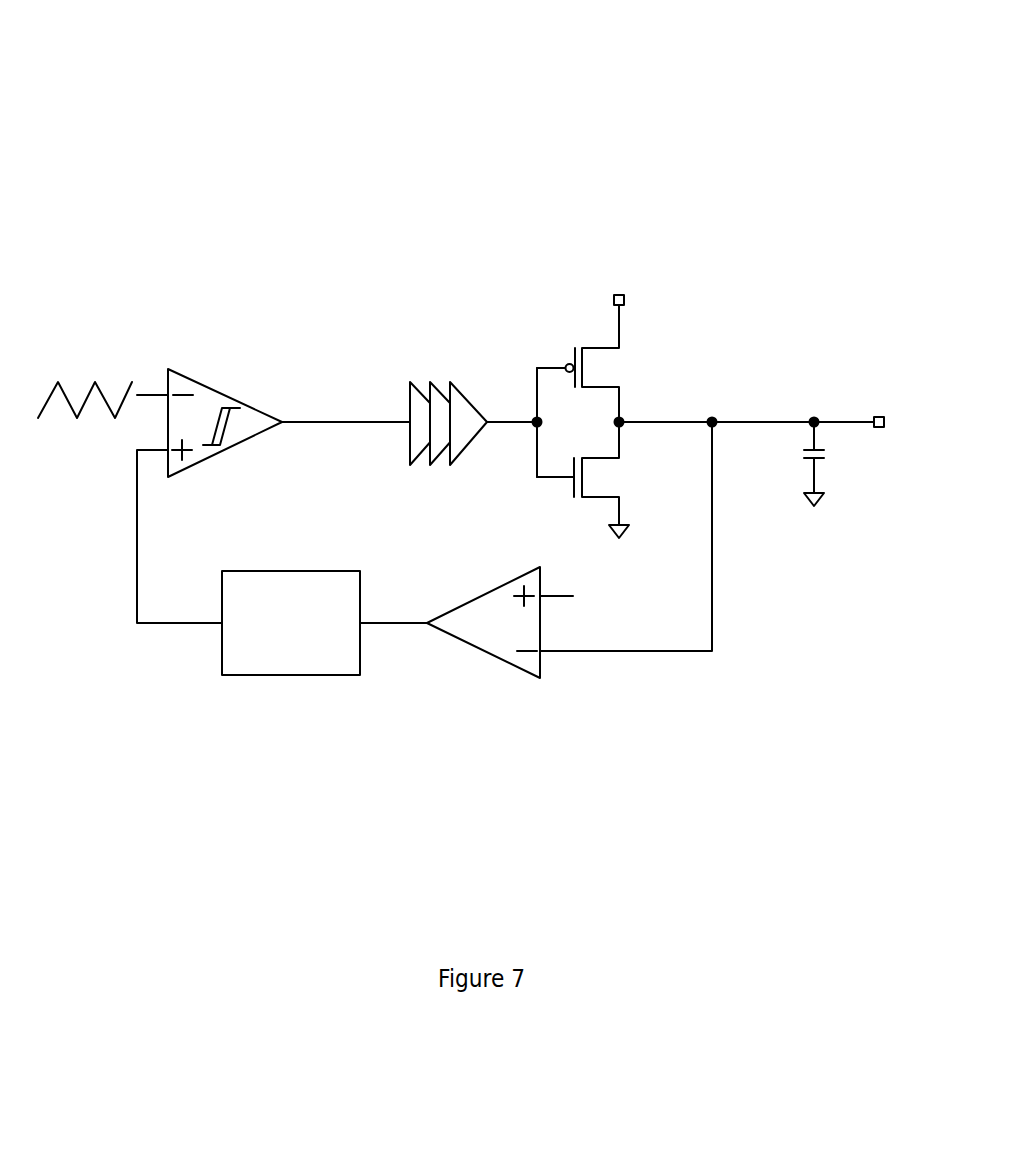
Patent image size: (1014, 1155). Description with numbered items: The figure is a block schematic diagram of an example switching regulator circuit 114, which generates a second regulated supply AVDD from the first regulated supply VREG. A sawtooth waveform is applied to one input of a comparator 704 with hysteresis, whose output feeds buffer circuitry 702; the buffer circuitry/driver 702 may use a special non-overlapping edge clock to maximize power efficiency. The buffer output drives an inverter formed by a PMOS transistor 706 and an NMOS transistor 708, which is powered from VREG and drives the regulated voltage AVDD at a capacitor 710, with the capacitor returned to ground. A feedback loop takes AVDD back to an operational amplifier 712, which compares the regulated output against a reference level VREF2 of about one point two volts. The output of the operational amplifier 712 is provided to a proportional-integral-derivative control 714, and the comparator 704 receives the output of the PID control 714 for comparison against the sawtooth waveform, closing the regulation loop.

The switching regulator circuit 114 is at (148, 42).
The buffer circuitry 702 is at (487, 378).
The comparator 704 is at (208, 398).
The PMOS transistor 706 is at (592, 363).
The NMOS transistor 708 is at (592, 480).
The capacitor 710 is at (785, 464).
The operational amplifier 712 is at (508, 634).
The proportional-integral-derivative (PID) control 714 is at (312, 662).